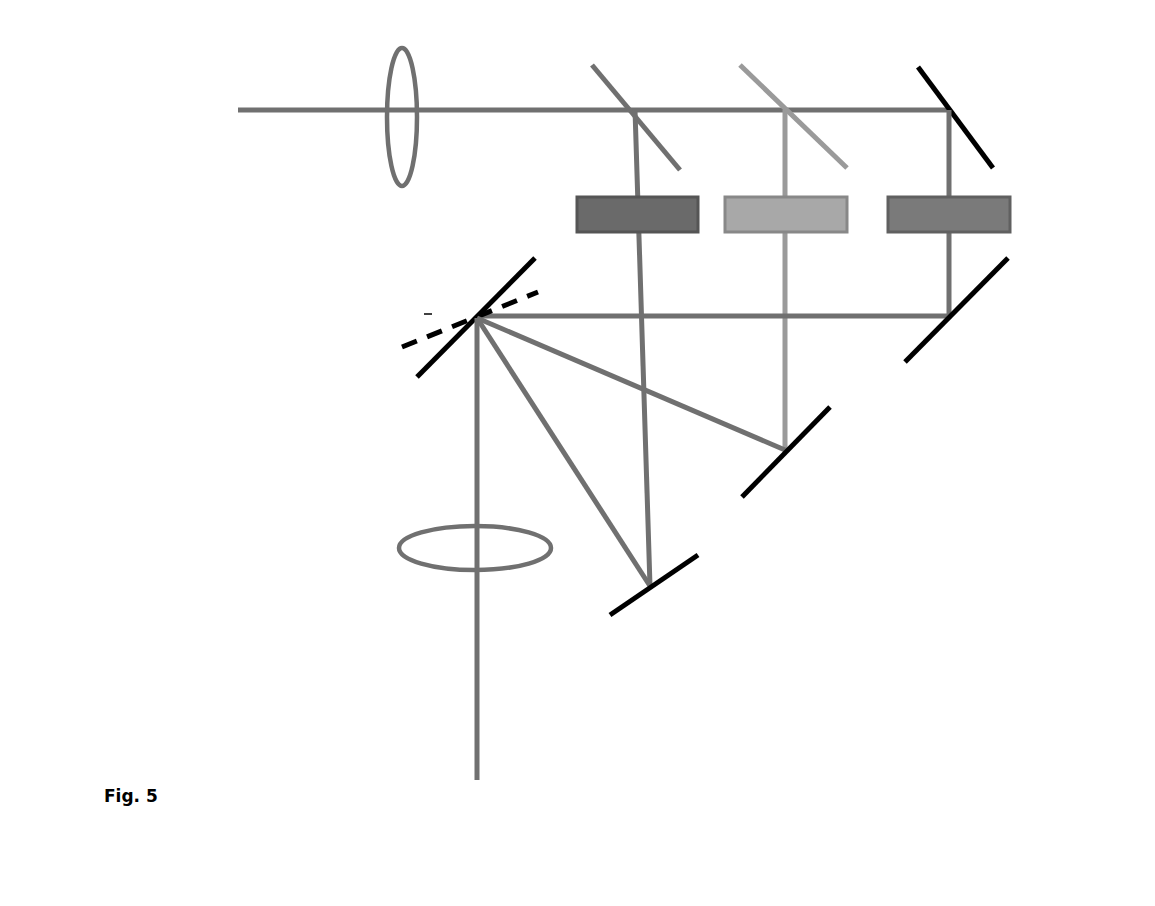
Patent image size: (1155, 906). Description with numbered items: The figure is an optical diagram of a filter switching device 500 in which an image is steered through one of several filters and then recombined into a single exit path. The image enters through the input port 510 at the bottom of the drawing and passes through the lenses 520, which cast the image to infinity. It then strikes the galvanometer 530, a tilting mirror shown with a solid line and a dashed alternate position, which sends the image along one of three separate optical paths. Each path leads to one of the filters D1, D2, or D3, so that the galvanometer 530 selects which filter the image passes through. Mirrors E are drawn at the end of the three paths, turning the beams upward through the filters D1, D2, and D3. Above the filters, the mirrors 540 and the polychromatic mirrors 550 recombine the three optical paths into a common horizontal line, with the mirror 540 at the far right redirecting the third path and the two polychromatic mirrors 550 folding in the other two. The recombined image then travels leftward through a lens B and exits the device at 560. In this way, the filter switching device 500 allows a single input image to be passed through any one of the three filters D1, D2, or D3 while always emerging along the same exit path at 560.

The filter switching device 500 is at (1136, 101).
The input port 510 is at (514, 549).
The lenses 520 is at (446, 561).
The galvanometer 530 is at (470, 317).
The mirrors 540 is at (962, 117).
The polychromatic mirrors 550 is at (719, 117).
The exit 560 is at (594, 145).
The lens B is at (401, 148).
The filter D1 is at (624, 198).
The filter D2 is at (779, 198).
The filter D3 is at (949, 198).
The mirror E is at (809, 453).